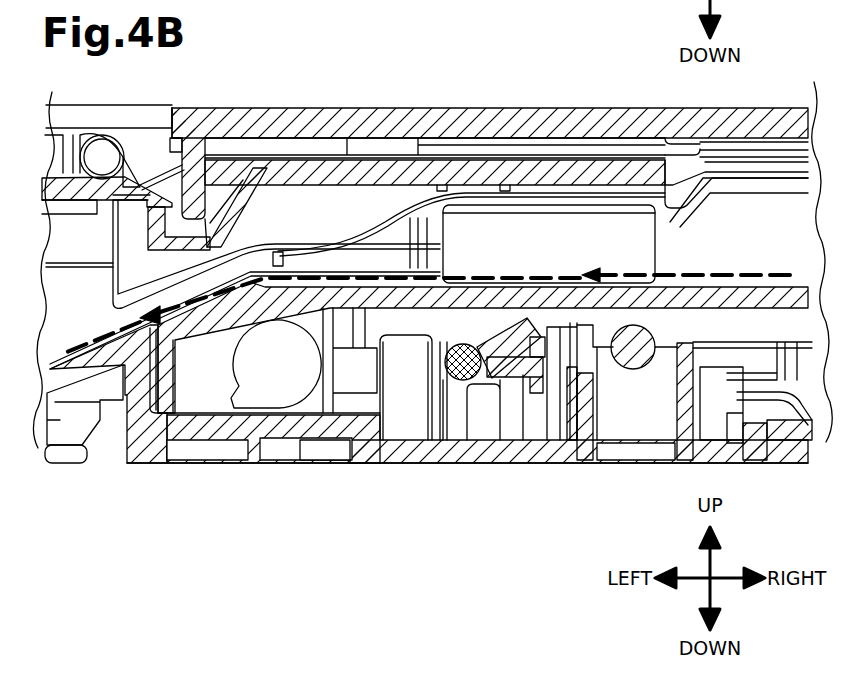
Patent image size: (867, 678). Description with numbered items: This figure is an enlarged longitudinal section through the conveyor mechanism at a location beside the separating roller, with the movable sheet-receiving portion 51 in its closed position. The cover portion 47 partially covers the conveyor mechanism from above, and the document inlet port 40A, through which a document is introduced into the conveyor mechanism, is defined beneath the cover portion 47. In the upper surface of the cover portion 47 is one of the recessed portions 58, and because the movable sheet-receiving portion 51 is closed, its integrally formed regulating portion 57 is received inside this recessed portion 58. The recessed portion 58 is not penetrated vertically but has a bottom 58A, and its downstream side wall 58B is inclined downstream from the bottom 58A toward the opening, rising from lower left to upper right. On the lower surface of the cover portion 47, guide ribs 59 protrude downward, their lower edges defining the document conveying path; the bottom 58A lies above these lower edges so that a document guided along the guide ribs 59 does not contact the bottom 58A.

The document inlet port 40A is at (680, 234).
The cover portion 47 is at (74, 150).
The movable sheet-receiving portion 51 is at (642, 113).
The regulating portion 57 is at (178, 156).
The recessed portion 58 is at (216, 203).
The bottom 58A is at (187, 242).
The side wall 58B is at (246, 177).
The guide rib 59 is at (358, 242).